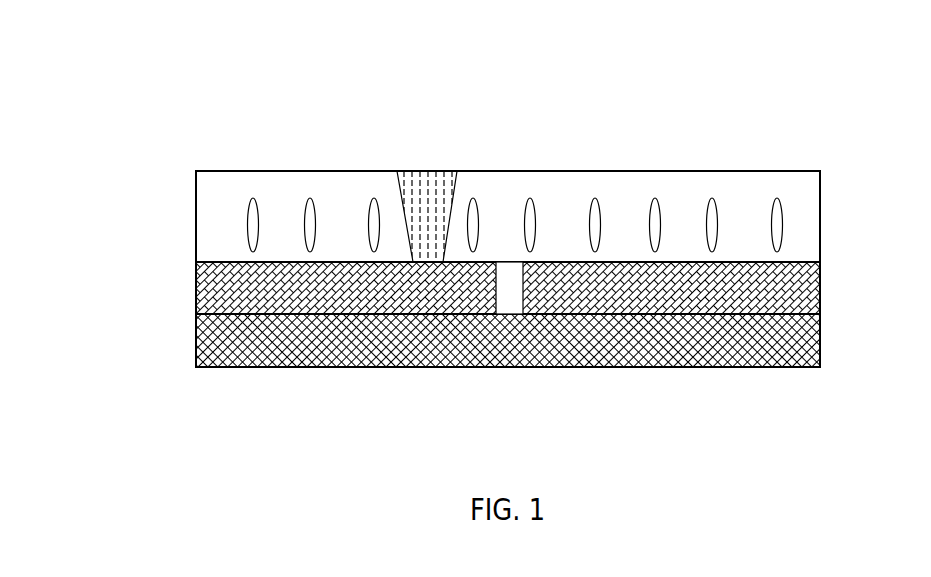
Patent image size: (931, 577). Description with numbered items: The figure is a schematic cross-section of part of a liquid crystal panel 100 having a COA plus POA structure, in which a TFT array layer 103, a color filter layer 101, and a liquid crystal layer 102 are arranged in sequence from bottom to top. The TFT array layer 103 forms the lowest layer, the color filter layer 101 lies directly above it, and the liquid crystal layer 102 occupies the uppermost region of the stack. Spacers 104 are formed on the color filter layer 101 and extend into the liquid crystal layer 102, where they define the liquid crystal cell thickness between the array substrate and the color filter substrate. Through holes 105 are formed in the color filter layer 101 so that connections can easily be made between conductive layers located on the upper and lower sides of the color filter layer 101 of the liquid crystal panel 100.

The liquid crystal panel 100 is at (170, 126).
The color filter layer 101 is at (198, 290).
The liquid crystal layer 102 is at (213, 253).
The TFT array layer 103 is at (210, 353).
The spacers 104 is at (433, 210).
The through holes 105 is at (508, 304).